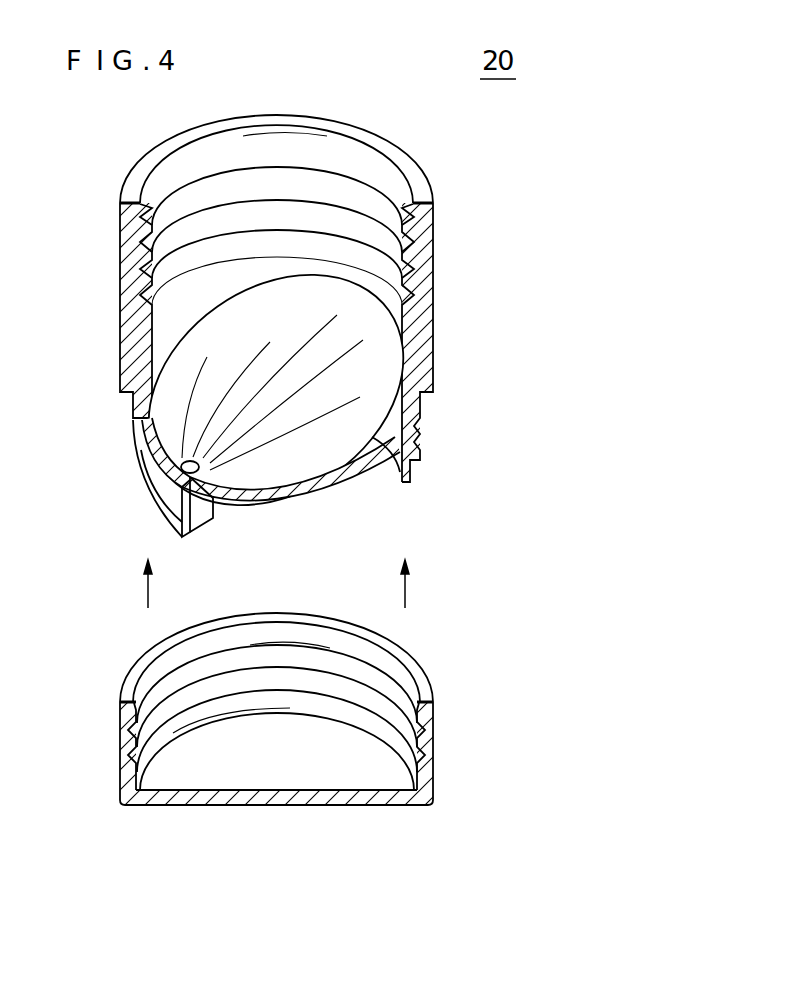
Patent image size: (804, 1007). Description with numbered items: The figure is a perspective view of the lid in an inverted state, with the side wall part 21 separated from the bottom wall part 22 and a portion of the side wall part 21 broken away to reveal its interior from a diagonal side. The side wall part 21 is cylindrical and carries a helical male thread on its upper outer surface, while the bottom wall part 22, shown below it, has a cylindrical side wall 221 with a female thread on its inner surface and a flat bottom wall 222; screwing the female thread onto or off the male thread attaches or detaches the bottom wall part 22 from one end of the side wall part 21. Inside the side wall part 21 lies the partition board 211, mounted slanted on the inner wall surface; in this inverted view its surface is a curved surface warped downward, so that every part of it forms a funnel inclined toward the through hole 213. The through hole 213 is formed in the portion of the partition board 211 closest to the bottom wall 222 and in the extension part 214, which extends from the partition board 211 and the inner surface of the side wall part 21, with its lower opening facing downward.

The side wall part 21 is at (402, 460).
The partition board 211 is at (324, 456).
The through hole 213 is at (181, 468).
The extension part 214 is at (201, 518).
The bottom wall part 22 is at (412, 491).
The side wall 221 is at (435, 761).
The bottom wall 222 is at (367, 806).